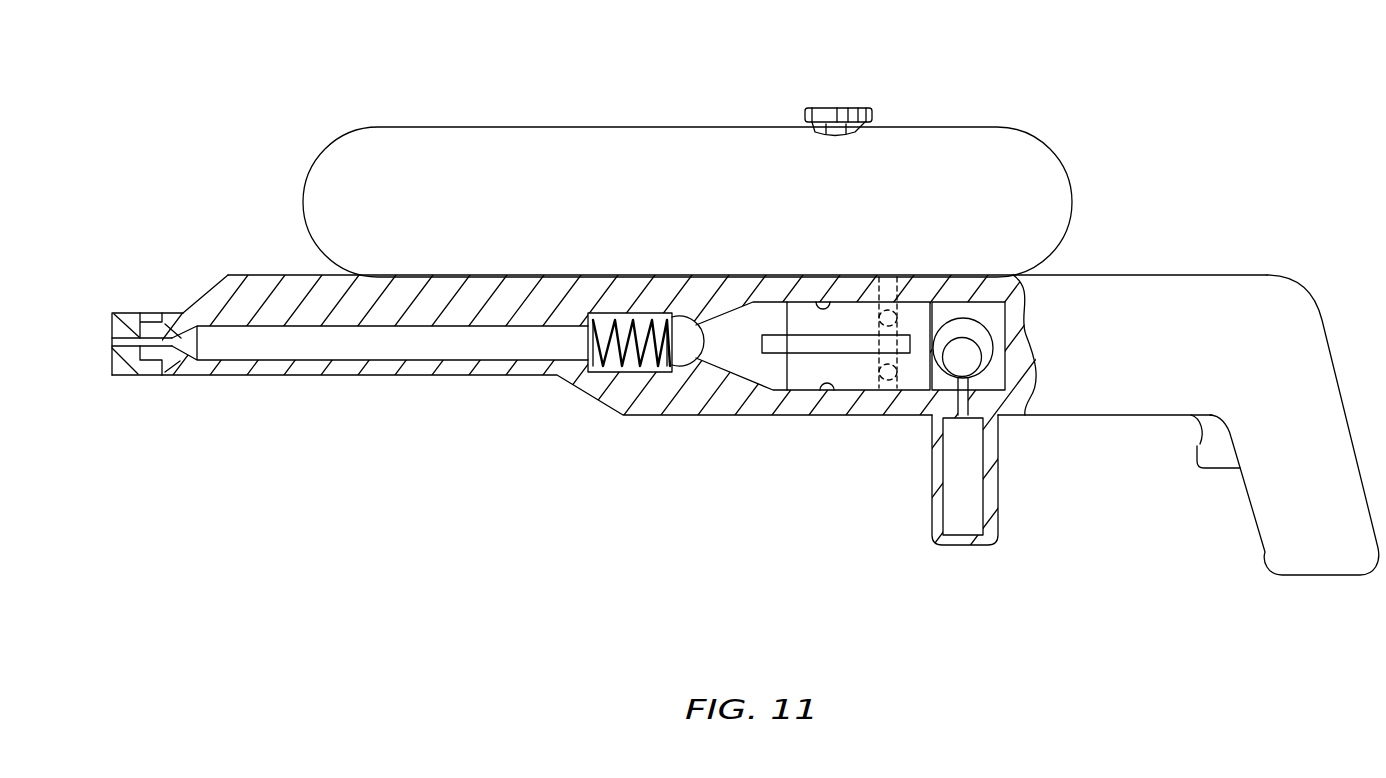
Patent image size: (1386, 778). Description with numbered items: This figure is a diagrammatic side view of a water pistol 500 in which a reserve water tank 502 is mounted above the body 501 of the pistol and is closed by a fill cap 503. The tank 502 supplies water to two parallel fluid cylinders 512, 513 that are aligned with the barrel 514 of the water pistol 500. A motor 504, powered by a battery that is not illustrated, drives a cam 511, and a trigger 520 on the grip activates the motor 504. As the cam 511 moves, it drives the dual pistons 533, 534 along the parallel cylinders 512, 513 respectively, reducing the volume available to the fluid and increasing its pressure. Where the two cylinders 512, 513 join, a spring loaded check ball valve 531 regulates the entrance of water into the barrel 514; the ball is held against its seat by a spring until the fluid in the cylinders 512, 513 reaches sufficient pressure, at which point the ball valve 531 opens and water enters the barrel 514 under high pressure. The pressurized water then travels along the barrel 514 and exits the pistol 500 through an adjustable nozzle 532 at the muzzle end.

The water pistol 500 is at (1112, 122).
The housing body 501 is at (781, 407).
The reserve water tank 502 is at (445, 146).
The fill cap 503 is at (829, 110).
The motor 504 is at (965, 456).
The cam 511 is at (990, 333).
The fluid cylinder 512 is at (823, 300).
The fluid cylinder 513 is at (830, 390).
The barrel 514 is at (233, 327).
The trigger 520 is at (1203, 442).
The spring loaded check ball valve 531 is at (687, 333).
The adjustable nozzle 532 is at (118, 312).
The piston 533 is at (847, 323).
The piston 534 is at (860, 370).